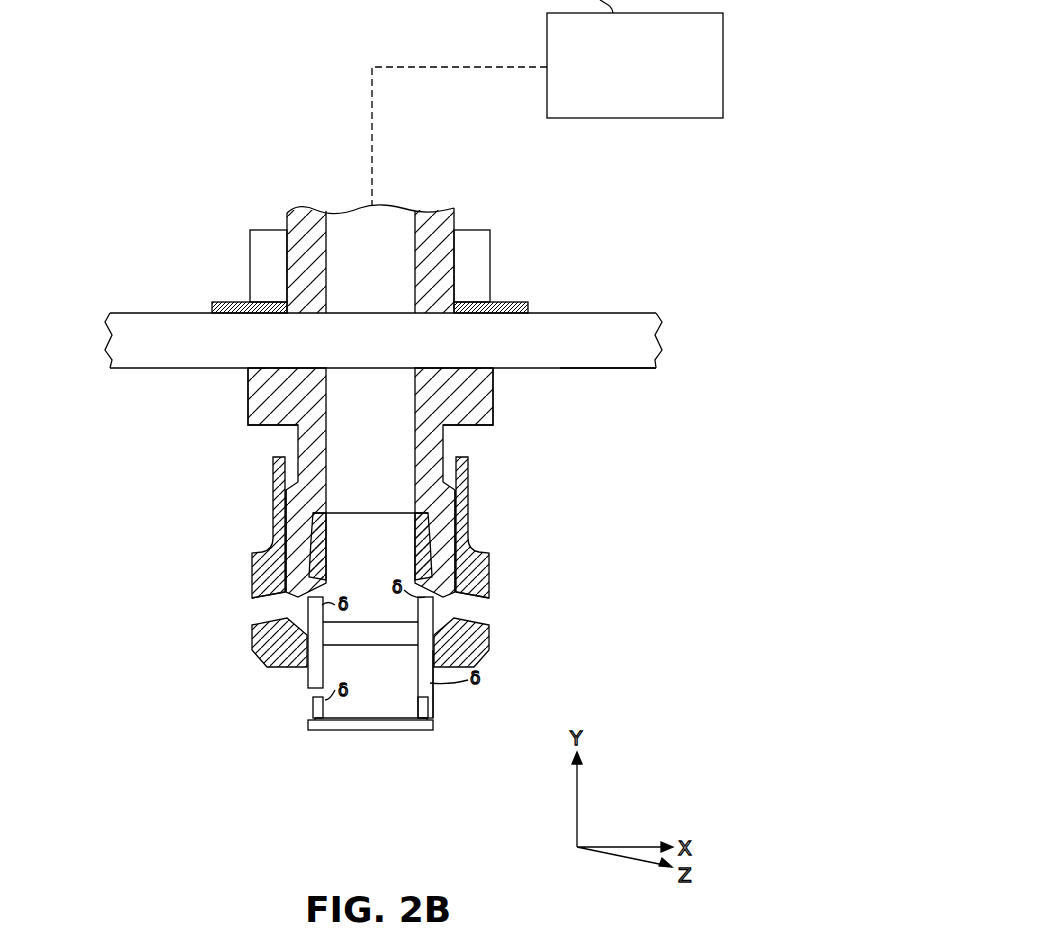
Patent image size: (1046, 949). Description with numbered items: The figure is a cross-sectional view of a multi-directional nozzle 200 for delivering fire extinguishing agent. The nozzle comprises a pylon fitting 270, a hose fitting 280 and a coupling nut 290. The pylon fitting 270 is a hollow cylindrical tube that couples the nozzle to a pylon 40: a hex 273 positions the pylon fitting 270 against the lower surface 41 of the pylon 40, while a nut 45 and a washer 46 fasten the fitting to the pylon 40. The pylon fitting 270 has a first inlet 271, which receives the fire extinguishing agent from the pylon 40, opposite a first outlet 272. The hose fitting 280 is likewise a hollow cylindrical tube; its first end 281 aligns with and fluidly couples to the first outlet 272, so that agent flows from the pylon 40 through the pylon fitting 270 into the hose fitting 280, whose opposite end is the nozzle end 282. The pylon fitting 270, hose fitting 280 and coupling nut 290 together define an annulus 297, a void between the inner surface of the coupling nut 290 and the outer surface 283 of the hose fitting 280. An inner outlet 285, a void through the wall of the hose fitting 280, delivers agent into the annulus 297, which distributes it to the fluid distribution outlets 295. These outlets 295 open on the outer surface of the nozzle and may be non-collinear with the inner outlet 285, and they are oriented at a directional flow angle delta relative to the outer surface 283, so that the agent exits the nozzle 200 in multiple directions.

The multi-directional nozzle 200 is at (108, 212).
The first inlet 271 is at (362, 222).
The nut 45 is at (483, 262).
The washer 46 is at (510, 304).
The pylon 40 is at (620, 325).
The lower surface 41 is at (598, 372).
The hex 273 is at (470, 415).
The pylon fitting 270 is at (300, 440).
The first outlet 272 is at (432, 497).
The first end 281 is at (380, 523).
The inner outlet 285 is at (320, 582).
The coupling nut 290 is at (255, 565).
The annulus 297 is at (262, 598).
The fluid distribution outlets 295 is at (256, 622).
The hose fitting 280 is at (430, 692).
The outer surface 283 is at (435, 710).
The nozzle end 282 is at (385, 730).